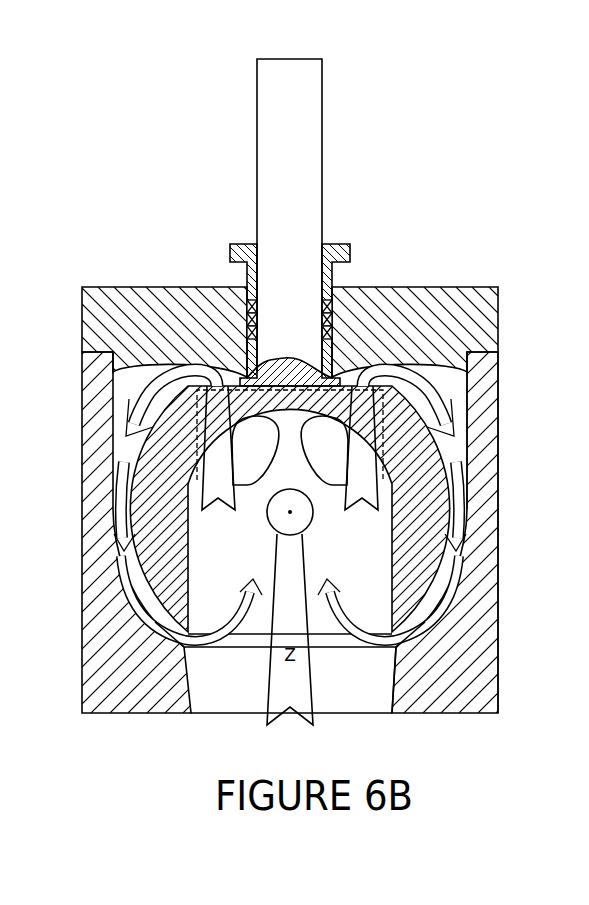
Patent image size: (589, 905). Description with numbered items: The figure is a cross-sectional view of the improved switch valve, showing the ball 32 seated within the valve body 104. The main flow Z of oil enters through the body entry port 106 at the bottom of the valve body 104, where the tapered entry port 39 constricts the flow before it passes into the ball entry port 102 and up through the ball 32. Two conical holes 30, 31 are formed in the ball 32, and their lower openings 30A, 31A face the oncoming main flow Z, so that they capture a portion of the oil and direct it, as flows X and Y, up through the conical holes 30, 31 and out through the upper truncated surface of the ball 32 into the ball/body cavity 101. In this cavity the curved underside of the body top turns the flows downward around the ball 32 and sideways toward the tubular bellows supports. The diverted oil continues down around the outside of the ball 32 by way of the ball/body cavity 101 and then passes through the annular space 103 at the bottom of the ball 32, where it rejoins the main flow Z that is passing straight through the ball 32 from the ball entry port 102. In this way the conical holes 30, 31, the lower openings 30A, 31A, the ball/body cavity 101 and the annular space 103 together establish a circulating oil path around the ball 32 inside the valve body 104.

The conical hole 30 is at (338, 447).
The conical hole 31 is at (256, 446).
The lower opening of conical hole 30A is at (383, 482).
The lower opening of conical hole 31A is at (197, 483).
The ball 32 is at (490, 370).
The tapered entry port 39 is at (392, 672).
The ball/body cavity 101 is at (140, 383).
The ball entry port 102 is at (257, 643).
The annular space 103 is at (186, 648).
The valve body 104 is at (442, 682).
The body entry port 106 is at (385, 714).